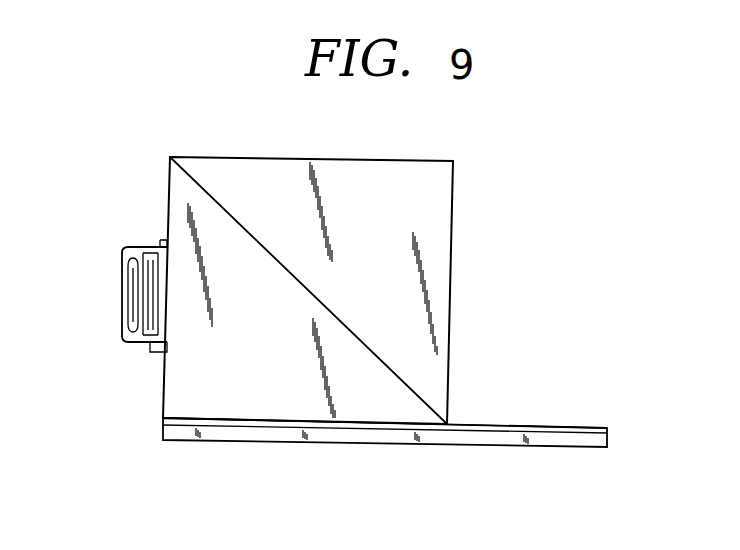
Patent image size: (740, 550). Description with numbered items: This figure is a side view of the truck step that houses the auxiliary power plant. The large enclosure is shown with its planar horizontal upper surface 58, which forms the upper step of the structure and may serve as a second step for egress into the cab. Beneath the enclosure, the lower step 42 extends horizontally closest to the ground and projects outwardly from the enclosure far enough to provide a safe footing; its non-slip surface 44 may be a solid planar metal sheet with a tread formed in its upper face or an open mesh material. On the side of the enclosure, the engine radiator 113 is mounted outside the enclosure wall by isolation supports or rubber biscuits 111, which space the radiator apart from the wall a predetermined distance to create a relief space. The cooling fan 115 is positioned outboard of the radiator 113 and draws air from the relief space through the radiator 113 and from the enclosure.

The upper surface 58 is at (343, 160).
The lower step 42 is at (567, 440).
The non-slip surface 44 is at (540, 428).
The rubber biscuits 111 is at (160, 248).
The cooling fan 115 is at (120, 272).
The engine radiator 113 is at (147, 343).